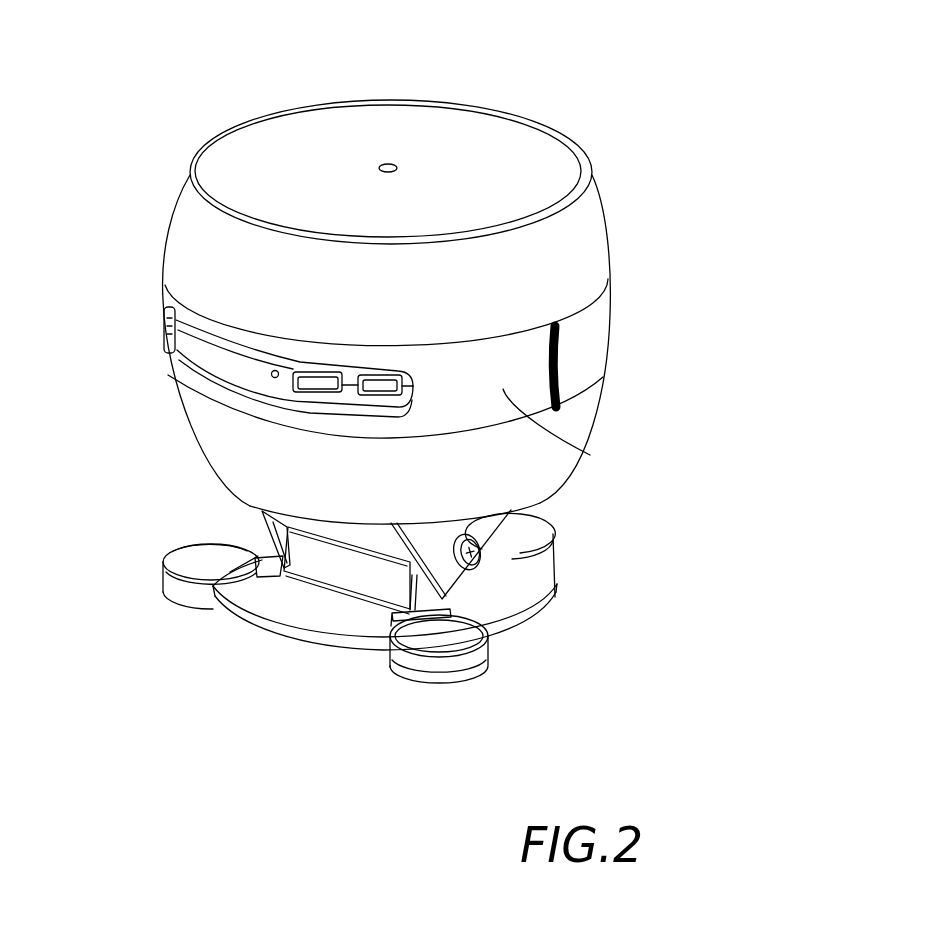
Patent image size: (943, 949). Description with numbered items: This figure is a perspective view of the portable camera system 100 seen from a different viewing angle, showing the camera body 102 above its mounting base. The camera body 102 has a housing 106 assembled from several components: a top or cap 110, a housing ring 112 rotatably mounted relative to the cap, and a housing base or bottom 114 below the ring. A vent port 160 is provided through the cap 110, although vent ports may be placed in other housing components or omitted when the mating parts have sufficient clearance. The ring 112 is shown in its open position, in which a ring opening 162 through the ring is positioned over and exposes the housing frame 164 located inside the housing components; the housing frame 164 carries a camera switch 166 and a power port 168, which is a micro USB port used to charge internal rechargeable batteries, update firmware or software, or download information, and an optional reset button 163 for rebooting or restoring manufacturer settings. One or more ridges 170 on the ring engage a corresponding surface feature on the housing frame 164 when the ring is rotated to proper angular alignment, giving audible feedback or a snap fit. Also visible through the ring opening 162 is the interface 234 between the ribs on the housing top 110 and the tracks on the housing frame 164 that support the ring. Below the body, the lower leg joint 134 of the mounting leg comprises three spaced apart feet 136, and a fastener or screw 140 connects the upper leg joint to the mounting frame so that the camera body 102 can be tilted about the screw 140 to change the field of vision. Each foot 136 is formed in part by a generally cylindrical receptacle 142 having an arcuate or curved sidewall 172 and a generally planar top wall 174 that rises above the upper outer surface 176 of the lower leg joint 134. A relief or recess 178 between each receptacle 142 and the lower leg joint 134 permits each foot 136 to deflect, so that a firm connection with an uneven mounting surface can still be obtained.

The camera system 100 is at (626, 139).
The camera body 102 is at (158, 192).
The housing 106 is at (478, 155).
The top or cap 110 is at (250, 148).
The housing ring 112 is at (588, 333).
The housing base or bottom 114 is at (535, 462).
The lower leg joint 134 is at (273, 630).
The feet 136 is at (178, 592).
The fastener or screw 140 is at (473, 556).
The receptacles 142 is at (477, 663).
The vent port 160 is at (389, 163).
The ring opening 162 is at (170, 338).
The reset button 163 is at (273, 378).
The housing frame 164 is at (222, 370).
The camera switch 166 is at (310, 380).
The power port 168 is at (377, 391).
The ridges 170 is at (560, 375).
The arcuate or curved sidewall 172 is at (413, 665).
The planar top wall 174 is at (188, 560).
The upper outer surface 176 is at (310, 607).
The relief or recess 178 is at (263, 570).
The interface 234 is at (203, 347).